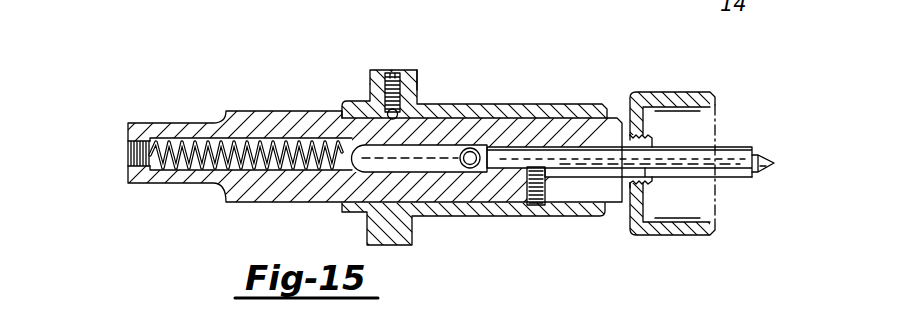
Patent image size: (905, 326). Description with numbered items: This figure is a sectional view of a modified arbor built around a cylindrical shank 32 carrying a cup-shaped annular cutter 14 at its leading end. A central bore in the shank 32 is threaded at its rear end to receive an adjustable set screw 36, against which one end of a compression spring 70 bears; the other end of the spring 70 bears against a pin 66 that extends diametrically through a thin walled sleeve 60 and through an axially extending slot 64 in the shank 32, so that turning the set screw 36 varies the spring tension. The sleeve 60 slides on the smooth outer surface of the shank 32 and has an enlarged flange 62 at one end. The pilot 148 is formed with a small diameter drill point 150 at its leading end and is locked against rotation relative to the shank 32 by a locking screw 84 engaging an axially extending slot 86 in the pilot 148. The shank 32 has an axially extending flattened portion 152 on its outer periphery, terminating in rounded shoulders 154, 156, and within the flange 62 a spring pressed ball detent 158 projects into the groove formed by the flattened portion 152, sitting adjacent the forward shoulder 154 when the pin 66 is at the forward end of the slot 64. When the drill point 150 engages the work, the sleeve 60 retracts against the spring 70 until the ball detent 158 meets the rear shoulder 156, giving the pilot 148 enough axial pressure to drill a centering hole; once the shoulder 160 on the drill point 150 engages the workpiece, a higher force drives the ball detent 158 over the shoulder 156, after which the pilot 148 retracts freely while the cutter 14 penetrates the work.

The cup-shaped annular cutter 14 is at (708, 95).
The cylindrical shank 32 is at (248, 187).
The set screw 36 is at (128, 150).
The sleeve 60 is at (585, 158).
The flange 62 is at (402, 76).
The slot 64 is at (447, 172).
The pin 66 is at (480, 143).
The compression spring 70 is at (172, 141).
The locking screw 84 is at (546, 195).
The slot 86 is at (628, 176).
The pilot 148 is at (633, 92).
The drill point 150 is at (773, 157).
The flattened portion 152 is at (350, 100).
The forward shoulder 154 is at (427, 107).
The rear shoulder 156 is at (338, 103).
The spring pressed ball detent 158 is at (421, 92).
The shoulder 160 is at (761, 175).